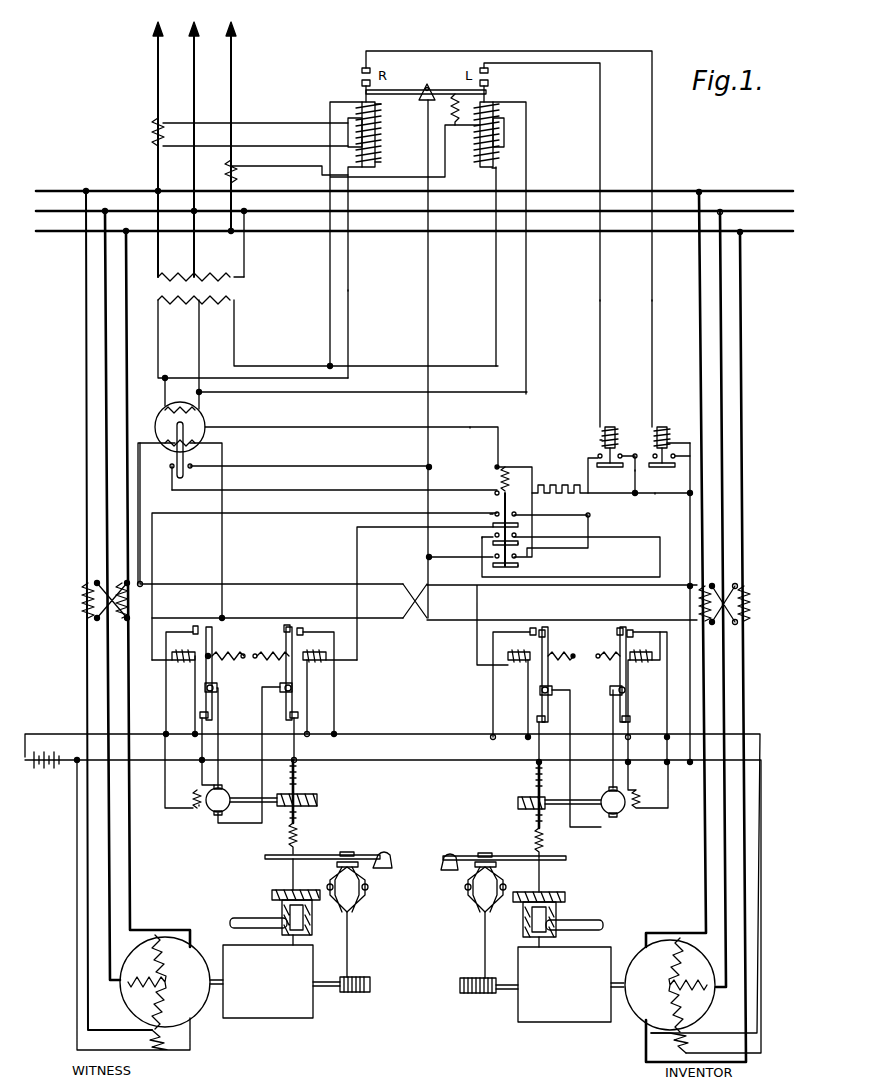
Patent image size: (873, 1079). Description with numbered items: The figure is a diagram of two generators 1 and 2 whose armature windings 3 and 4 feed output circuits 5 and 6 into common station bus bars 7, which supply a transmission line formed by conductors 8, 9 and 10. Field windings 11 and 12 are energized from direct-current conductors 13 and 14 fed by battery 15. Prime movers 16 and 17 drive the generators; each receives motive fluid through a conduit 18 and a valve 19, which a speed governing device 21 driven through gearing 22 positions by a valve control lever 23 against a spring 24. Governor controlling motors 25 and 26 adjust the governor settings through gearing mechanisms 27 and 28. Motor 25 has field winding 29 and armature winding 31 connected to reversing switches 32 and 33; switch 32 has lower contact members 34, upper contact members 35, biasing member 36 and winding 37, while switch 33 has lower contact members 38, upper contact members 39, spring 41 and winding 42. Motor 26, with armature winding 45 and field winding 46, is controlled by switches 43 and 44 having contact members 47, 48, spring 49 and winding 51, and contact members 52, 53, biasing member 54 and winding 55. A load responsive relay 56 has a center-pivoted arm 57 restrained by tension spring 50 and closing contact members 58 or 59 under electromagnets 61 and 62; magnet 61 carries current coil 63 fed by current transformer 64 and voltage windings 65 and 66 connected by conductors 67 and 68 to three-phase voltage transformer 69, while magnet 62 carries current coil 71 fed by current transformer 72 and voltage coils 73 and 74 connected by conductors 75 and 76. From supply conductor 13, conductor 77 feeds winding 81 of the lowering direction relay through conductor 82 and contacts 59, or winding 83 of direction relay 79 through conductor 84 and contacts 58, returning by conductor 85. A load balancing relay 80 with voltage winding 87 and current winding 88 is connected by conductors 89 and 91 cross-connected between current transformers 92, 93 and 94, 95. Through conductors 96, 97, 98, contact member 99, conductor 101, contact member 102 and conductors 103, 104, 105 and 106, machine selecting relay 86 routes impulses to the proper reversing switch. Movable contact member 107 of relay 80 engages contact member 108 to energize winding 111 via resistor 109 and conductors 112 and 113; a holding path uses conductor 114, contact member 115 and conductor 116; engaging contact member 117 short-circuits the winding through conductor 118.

The generator 1 is at (165, 971).
The generator 2 is at (670, 973).
The armature winding 3 is at (160, 976).
The armature winding 4 is at (682, 983).
The output circuit 5 is at (127, 670).
The output circuit 6 is at (708, 690).
The station bus bars 7 is at (540, 231).
The transmission line conductor 8 is at (158, 87).
The transmission line conductor 9 is at (194, 87).
The transmission line conductor 10 is at (232, 93).
The field winding 11 is at (172, 1058).
The field winding 12 is at (658, 1058).
The supply conductor 13 is at (397, 767).
The supply conductor 14 is at (392, 736).
The battery 15 is at (40, 768).
The prime mover 16 is at (270, 1025).
The prime mover 17 is at (573, 1025).
The conduit 18 is at (620, 420).
The valve 19 is at (278, 890).
The speed governing device 21 is at (376, 912).
The gearing 22 is at (357, 980).
The valve control lever 23 is at (313, 860).
The spring 24 is at (295, 838).
The governor controlling motor 25 is at (240, 784).
The governor controlling motor 26 is at (595, 784).
The gearing mechanism 27 is at (298, 793).
The gearing mechanism 28 is at (534, 794).
The field winding 29 is at (193, 797).
The armature winding 31 is at (228, 806).
The motor reversing switch 32 is at (230, 678).
The motor reversing switch 33 is at (277, 678).
The lower contact members 34 is at (200, 717).
The upper contact members 35 is at (200, 632).
The biasing member 36 is at (216, 651).
The winding 37 is at (186, 668).
The lower contact members 38 is at (290, 720).
The upper contact members 39 is at (287, 627).
The biasing spring 41 is at (273, 646).
The winding 42 is at (323, 646).
The reversing switch 43 is at (553, 685).
The reversing switch 44 is at (603, 685).
The armature winding 45 is at (601, 808).
The field winding 46 is at (642, 797).
The lower contact members 47 is at (552, 722).
The upper contact members 48 is at (536, 630).
The biasing member 49 is at (550, 652).
The tension spring 50 is at (460, 91).
The winding 51 is at (519, 646).
The lower contact members 52 is at (629, 712).
The upper contact members 53 is at (620, 629).
The biasing member 54 is at (607, 648).
The winding 55 is at (646, 646).
The load responsive relay 56 is at (425, 68).
The arm 57 is at (450, 84).
The contact members 58 is at (362, 82).
The contact members 59 is at (488, 73).
The electromagnet 61 is at (396, 144).
The electromagnet 62 is at (484, 185).
The current coil 63 is at (376, 128).
The current transformer 64 is at (153, 133).
The voltage winding 65 is at (378, 112).
The voltage winding 66 is at (379, 158).
The conductor 67 is at (347, 290).
The conductor 68 is at (158, 361).
The three-phase voltage transformer 69 is at (253, 298).
The current coil 71 is at (470, 133).
The current transformer 72 is at (240, 178).
The voltage coil 73 is at (496, 106).
The voltage coil 74 is at (494, 158).
The conductor 75 is at (496, 290).
The conductor 76 is at (196, 356).
The conductor 77 is at (690, 563).
The direction relay 79 is at (673, 420).
The load balancing relay 80 is at (190, 419).
The winding 81 is at (602, 436).
The conductor 82 is at (600, 322).
The winding 83 is at (674, 433).
The conductor 84 is at (652, 322).
The conductor 85 is at (429, 342).
The machine selecting relay 86 is at (520, 463).
The voltage winding 87 is at (187, 399).
The current winding 88 is at (203, 443).
The conductor 89 is at (239, 587).
The conductor 91 is at (236, 621).
The current transformer 92 is at (80, 600).
The current transformer 93 is at (131, 600).
The current transformer 94 is at (698, 604).
The current transformer 95 is at (750, 601).
The conductor 96 is at (655, 499).
The conductor 97 is at (635, 478).
The conductor 98 is at (634, 537).
The contact member 99 is at (493, 514).
The conductor 101 is at (357, 551).
The contact member 102 is at (522, 542).
The conductor 103 is at (482, 540).
The conductor 104 is at (588, 536).
The conductor 105 is at (477, 603).
The conductor 106 is at (372, 514).
The movable contact member 107 is at (185, 458).
The contact member 108 is at (190, 468).
The resistor 109 is at (575, 486).
The winding 111 is at (498, 482).
The conductor 112 is at (455, 429).
The conductor 113 is at (339, 473).
The conductor 114 is at (529, 470).
The switch contact member 115 is at (518, 570).
The conductor 116 is at (453, 558).
The contact member 117 is at (170, 469).
The conductor 118 is at (284, 497).